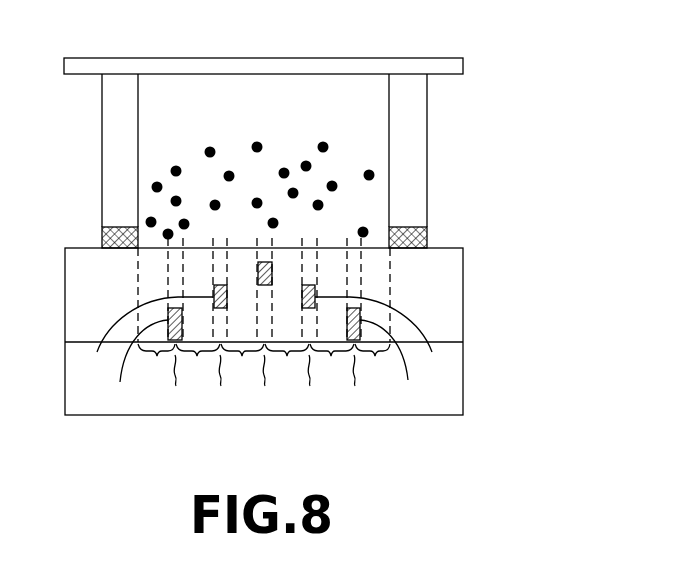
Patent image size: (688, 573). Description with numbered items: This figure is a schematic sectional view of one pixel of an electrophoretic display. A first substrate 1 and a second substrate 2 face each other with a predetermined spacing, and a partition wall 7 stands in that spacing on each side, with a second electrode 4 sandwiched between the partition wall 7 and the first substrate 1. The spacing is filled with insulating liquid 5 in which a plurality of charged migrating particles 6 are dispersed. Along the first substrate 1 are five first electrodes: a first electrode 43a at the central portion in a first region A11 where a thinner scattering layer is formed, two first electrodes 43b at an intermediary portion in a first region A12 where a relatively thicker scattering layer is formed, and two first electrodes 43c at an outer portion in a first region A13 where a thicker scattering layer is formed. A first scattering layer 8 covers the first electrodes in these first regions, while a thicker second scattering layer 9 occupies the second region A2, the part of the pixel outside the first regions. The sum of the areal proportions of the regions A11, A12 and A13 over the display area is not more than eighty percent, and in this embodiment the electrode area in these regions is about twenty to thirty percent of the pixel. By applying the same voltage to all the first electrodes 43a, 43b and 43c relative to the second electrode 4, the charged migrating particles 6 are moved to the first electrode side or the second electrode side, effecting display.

The first substrate 1 is at (457, 381).
The second substrate 2 is at (463, 68).
The second electrode 4 is at (101, 236).
The insulating liquid 5 is at (357, 97).
The charged migrating particles 6 is at (178, 166).
The partition wall 7 is at (104, 147).
The first scattering layer 8 is at (173, 257).
The second scattering layer 9 is at (455, 289).
The first electrode 43a is at (257, 278).
The first electrodes 43b is at (265, 339).
The first electrodes 43c is at (262, 364).
The second region A2 is at (264, 366).
The first region A11 is at (266, 401).
The first region A12 is at (268, 401).
The first region A13 is at (265, 401).